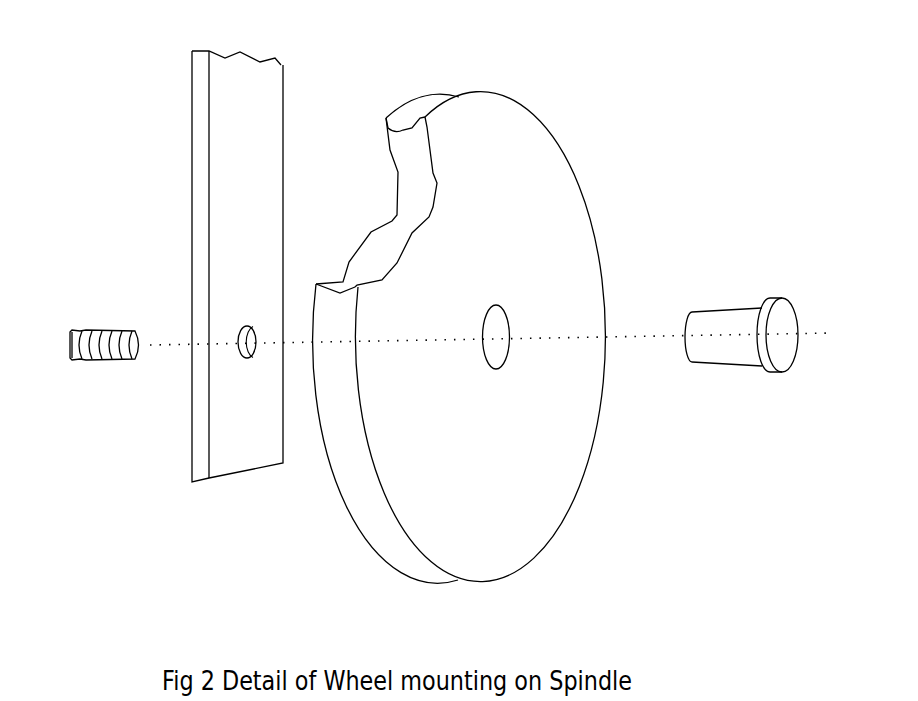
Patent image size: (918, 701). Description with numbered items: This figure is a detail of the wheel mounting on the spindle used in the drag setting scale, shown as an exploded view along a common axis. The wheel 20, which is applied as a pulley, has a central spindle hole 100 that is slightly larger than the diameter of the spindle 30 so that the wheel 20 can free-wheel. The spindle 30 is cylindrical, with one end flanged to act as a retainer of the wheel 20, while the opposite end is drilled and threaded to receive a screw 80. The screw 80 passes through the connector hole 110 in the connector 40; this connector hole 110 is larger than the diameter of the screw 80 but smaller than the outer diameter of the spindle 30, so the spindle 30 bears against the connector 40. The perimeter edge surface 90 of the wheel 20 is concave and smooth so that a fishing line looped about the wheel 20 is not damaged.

The wheel 20 is at (567, 128).
The spindle 30 is at (792, 297).
The connector 40 is at (182, 148).
The screw 80 is at (100, 325).
The perimeter edge surface 90 is at (395, 103).
The spindle hole 100 is at (518, 307).
The connector hole 110 is at (236, 378).